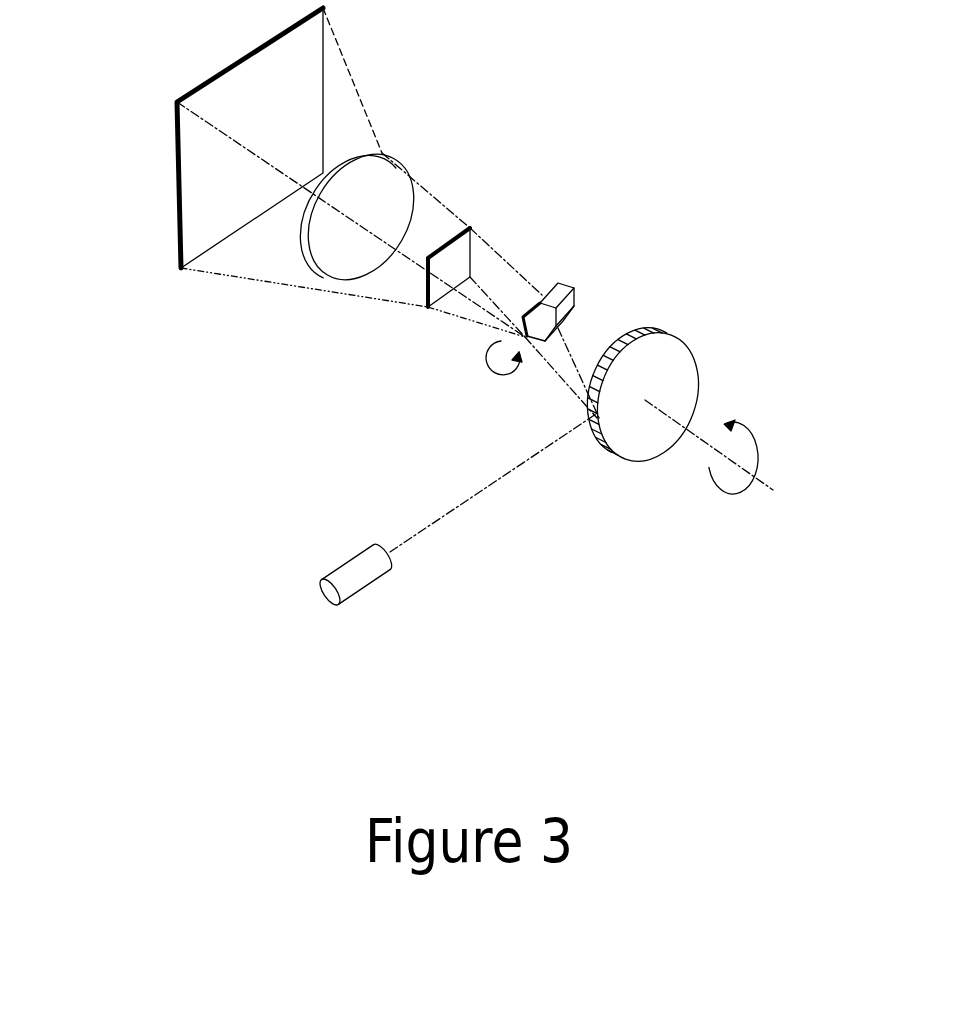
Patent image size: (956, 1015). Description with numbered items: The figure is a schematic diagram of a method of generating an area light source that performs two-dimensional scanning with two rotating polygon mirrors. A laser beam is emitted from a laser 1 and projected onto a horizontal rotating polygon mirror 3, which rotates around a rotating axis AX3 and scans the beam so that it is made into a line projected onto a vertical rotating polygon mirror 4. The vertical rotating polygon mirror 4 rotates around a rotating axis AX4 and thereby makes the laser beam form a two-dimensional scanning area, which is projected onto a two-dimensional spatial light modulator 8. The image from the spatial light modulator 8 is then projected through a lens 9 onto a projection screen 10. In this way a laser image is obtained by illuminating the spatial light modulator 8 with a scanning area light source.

The laser 1 is at (362, 577).
The horizontal rotating polygon mirror 3 is at (682, 333).
The vertical rotating polygon mirror 4 is at (572, 287).
The 2-D spatial light modulator 8 is at (437, 286).
The lens 9 is at (395, 205).
The projection screen 10 is at (200, 192).
The rotating axis AX3 is at (758, 463).
The rotating axis AX4 is at (517, 343).